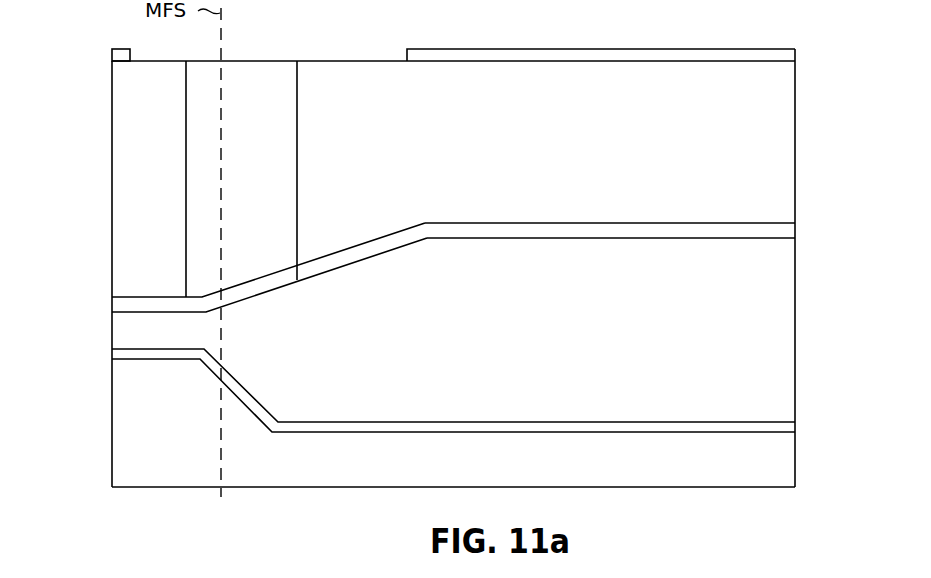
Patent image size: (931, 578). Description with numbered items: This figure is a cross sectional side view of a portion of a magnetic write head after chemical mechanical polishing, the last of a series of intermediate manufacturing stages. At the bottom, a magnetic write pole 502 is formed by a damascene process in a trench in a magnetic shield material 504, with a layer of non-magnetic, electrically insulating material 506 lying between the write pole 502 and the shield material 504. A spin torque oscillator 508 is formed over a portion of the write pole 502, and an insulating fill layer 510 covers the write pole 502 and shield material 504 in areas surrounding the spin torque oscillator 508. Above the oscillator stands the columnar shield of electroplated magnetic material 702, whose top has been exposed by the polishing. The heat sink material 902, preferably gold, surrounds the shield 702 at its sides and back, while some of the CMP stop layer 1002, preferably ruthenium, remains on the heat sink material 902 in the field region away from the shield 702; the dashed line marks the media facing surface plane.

The magnetic write pole 502 is at (571, 331).
The magnetic shield material 504 is at (569, 459).
The non-magnetic, electrically insulating material 506 is at (585, 425).
The spin torque oscillator 508 is at (250, 290).
The insulating fill layer 510 is at (582, 234).
The magnetic material 702 is at (280, 137).
The heat sink material 902 is at (135, 176).
The CMP stop layer 1002 is at (121, 50).